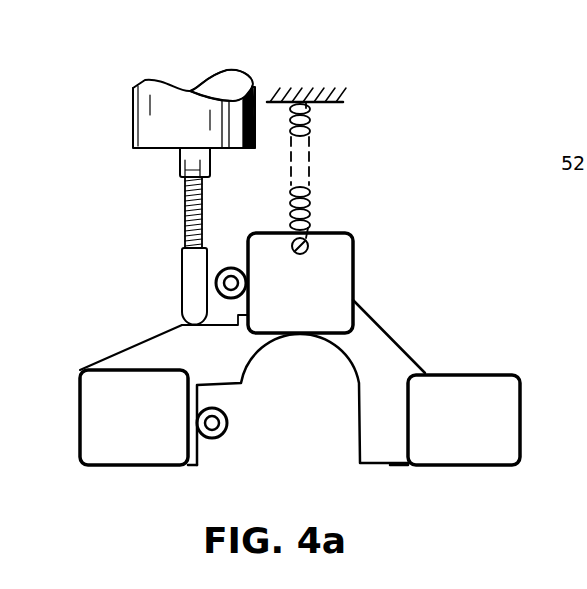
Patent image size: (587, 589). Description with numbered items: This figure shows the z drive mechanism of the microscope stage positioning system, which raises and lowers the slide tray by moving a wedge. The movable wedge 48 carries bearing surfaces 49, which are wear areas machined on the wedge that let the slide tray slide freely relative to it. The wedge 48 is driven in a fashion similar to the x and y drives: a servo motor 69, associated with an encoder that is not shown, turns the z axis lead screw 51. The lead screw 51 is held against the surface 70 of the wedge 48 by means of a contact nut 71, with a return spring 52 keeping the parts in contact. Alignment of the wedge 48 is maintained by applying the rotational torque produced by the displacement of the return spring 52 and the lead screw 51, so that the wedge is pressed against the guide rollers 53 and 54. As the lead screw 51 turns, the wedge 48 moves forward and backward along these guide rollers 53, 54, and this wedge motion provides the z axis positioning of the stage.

The wedge member 48 is at (522, 410).
The bearing surfaces 49 is at (315, 287).
The z axis lead screw 51 is at (185, 214).
The return spring 52 is at (307, 124).
The guide roller 53 is at (226, 268).
The guide roller 54 is at (228, 418).
The servo motor 69 is at (162, 100).
The surface of the wedge 70 is at (183, 318).
The contact nut 71 is at (182, 277).